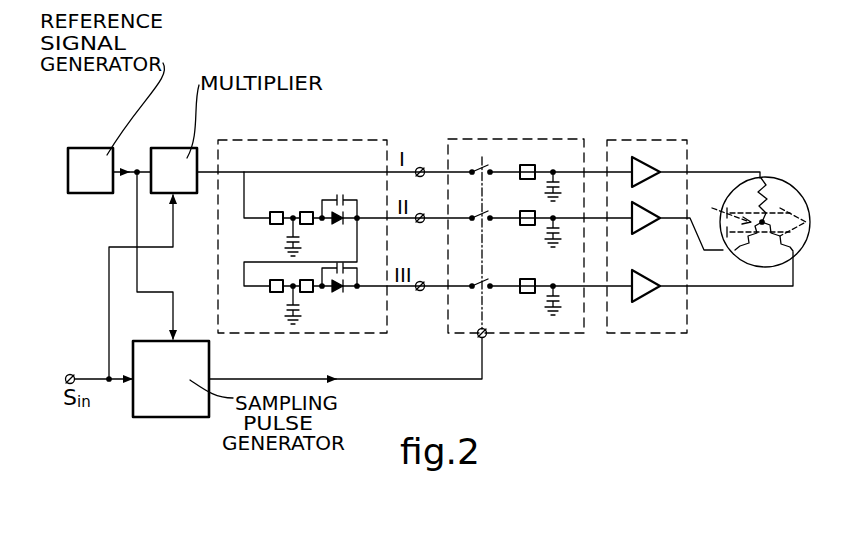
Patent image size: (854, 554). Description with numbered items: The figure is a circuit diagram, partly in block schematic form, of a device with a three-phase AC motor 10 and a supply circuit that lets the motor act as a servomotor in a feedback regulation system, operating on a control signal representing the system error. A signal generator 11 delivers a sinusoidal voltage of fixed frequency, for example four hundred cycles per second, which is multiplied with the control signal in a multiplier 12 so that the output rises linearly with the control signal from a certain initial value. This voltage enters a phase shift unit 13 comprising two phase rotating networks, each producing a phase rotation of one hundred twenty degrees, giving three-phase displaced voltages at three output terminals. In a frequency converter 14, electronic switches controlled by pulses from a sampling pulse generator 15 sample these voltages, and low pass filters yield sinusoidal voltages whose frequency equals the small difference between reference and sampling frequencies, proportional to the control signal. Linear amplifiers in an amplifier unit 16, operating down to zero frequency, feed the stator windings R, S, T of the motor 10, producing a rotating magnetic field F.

The three-phase AC motor 10 is at (757, 267).
The signal generator 11 is at (96, 152).
The multiplier 12 is at (175, 152).
The phase shift unit 13 is at (278, 140).
The frequency converter 14 is at (512, 140).
The sampling pulse generator 15 is at (173, 412).
The amplifier unit 16 is at (634, 140).